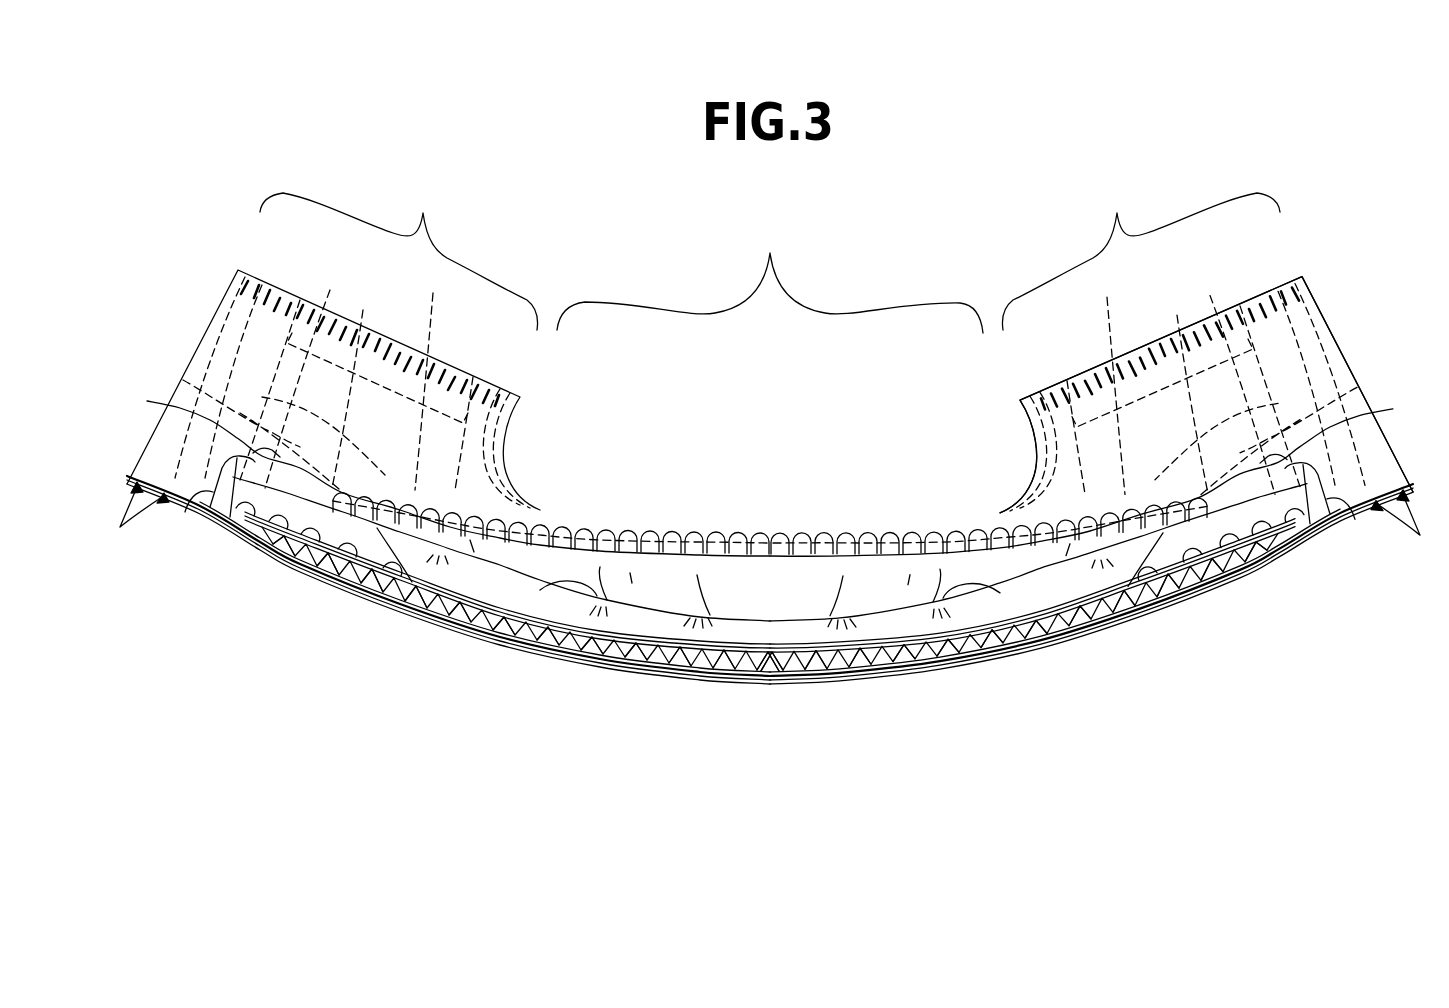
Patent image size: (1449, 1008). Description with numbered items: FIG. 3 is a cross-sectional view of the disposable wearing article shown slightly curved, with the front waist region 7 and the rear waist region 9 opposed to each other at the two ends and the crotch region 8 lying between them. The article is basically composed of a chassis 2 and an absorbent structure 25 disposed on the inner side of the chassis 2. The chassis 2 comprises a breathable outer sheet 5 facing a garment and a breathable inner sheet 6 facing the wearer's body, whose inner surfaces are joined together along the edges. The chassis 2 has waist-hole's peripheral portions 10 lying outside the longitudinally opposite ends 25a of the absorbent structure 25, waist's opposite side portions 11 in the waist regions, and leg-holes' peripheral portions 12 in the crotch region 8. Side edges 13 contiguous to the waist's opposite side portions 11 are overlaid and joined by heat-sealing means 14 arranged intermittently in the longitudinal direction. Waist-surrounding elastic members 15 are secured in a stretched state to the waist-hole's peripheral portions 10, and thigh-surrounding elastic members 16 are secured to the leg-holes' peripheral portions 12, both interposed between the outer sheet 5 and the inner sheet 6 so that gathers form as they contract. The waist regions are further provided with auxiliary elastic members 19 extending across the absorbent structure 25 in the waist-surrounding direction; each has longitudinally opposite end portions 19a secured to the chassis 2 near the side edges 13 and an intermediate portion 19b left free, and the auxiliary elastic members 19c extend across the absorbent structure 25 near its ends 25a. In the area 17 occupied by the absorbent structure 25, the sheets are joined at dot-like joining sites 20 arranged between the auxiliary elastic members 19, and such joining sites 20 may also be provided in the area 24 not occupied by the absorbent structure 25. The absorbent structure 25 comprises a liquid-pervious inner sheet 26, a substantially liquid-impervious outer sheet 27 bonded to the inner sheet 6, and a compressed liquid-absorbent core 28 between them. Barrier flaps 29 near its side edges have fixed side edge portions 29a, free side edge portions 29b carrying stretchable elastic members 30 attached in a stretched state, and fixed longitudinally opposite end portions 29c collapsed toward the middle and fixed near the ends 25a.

The chassis 2 is at (1302, 278).
The outer sheet 5 is at (737, 682).
The inner sheet 6 is at (787, 670).
The front waist region 7 is at (399, 254).
The crotch region 8 is at (770, 273).
The rear waist region 9 is at (1141, 259).
The waist-hole's peripheral portions 10 is at (225, 338).
The waist's opposite side portions 11 is at (400, 423).
The leg-holes' peripheral portions 12 is at (517, 507).
The side edges 13 is at (300, 297).
The heat-sealing means 14 is at (257, 290).
The waist-surrounding elastic members 15 is at (772, 522).
The thigh-surrounding elastic members 16 is at (1027, 454).
The area occupied with the absorbent structure 17 is at (380, 550).
The auxiliary elastic members 19 is at (290, 398).
The longitudinally opposite end portions 19a is at (770, 380).
The intermediate portion 19b is at (232, 560).
The auxiliary elastic members near the longitudinal ends 19c is at (182, 380).
The joining sites 20 is at (213, 533).
The area not occupied with the absorbent structure 24 is at (379, 472).
The absorbent structure 25 is at (673, 643).
The longitudinally opposite ends 25a is at (197, 510).
The liquid-pervious inner sheet 26 is at (927, 636).
The liquid-impervious outer sheet 27 is at (887, 664).
The liquid-absorbent core 28 is at (827, 666).
The barrier flaps 29 is at (697, 575).
The fixed side edge portions 29a is at (833, 613).
The free side edge portions 29b is at (900, 567).
The fixed longitudinally opposite end portions 29c is at (769, 473).
The stretchable elastic members 30 is at (800, 522).